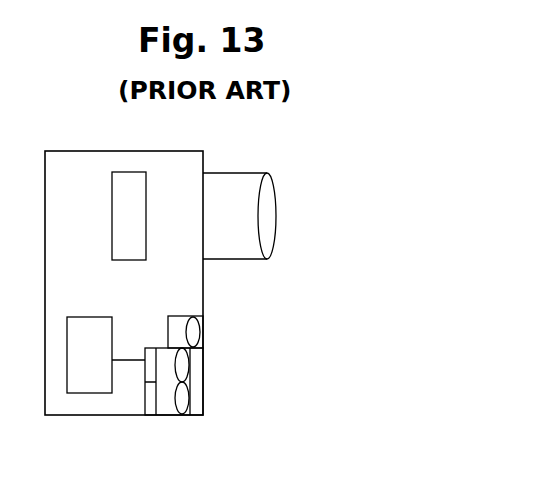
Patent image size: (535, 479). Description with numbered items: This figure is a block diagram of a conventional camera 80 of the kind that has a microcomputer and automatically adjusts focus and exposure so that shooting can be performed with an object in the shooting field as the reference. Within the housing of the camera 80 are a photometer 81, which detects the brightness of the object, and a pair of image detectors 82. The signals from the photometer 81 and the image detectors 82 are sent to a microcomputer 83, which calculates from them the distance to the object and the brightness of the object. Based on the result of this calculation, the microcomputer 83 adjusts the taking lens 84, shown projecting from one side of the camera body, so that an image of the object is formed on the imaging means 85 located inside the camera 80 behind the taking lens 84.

The camera 80 is at (82, 146).
The photometer 81 is at (198, 330).
The image detectors 82 is at (196, 383).
The microcomputer 83 is at (86, 316).
The taking lens 84 is at (275, 220).
The imaging means 85 is at (112, 214).